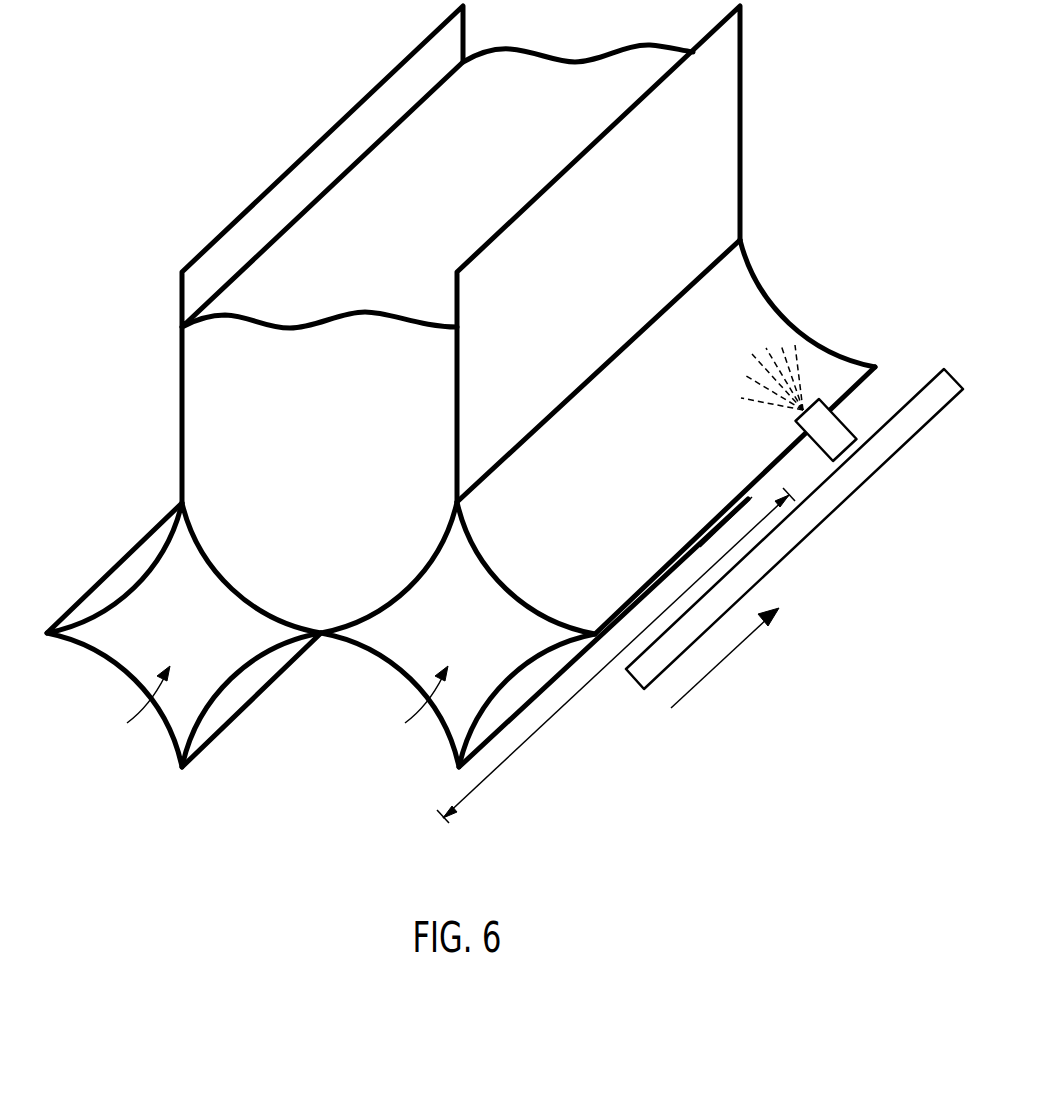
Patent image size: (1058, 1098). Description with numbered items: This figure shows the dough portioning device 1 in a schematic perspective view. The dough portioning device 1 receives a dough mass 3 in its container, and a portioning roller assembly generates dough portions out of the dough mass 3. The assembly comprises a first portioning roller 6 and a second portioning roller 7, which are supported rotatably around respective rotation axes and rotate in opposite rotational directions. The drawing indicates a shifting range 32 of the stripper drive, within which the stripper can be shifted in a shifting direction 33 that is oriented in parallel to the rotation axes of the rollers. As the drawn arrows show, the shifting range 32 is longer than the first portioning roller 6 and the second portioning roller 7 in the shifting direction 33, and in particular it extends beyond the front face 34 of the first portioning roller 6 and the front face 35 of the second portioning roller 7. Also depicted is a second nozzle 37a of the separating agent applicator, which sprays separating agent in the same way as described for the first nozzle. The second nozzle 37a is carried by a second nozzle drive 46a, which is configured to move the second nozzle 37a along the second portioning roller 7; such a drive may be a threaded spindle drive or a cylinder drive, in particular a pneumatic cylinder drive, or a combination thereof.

The dough portioning device 1 is at (147, 86).
The dough mass 3 is at (329, 406).
The first portioning roller 6 is at (120, 643).
The second portioning roller 7 is at (396, 643).
The shifting range 32 is at (571, 697).
The shifting direction 33 is at (717, 672).
The front face of the first portioning roller 34 is at (132, 705).
The front face of the second portioning roller 35 is at (409, 705).
The second nozzle 37a is at (827, 447).
The second nozzle drive 46a is at (882, 452).